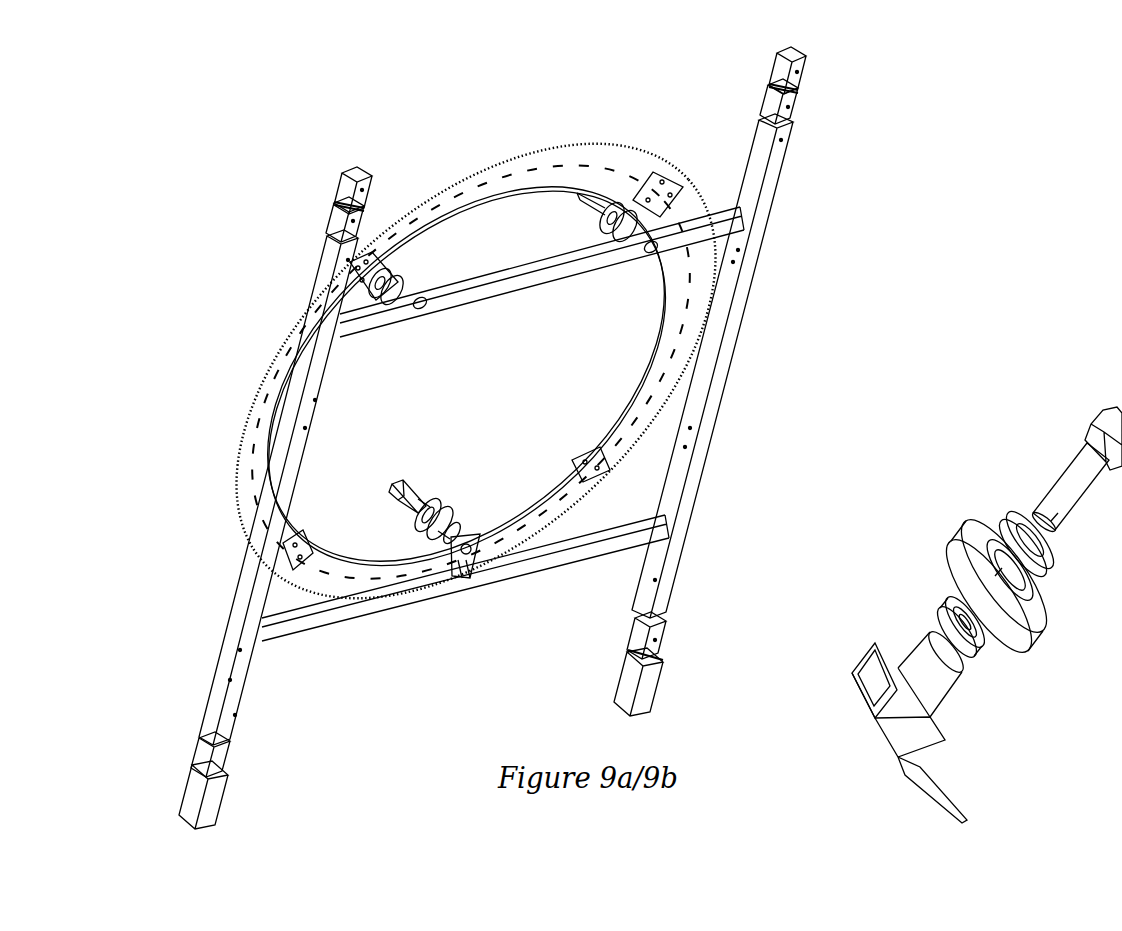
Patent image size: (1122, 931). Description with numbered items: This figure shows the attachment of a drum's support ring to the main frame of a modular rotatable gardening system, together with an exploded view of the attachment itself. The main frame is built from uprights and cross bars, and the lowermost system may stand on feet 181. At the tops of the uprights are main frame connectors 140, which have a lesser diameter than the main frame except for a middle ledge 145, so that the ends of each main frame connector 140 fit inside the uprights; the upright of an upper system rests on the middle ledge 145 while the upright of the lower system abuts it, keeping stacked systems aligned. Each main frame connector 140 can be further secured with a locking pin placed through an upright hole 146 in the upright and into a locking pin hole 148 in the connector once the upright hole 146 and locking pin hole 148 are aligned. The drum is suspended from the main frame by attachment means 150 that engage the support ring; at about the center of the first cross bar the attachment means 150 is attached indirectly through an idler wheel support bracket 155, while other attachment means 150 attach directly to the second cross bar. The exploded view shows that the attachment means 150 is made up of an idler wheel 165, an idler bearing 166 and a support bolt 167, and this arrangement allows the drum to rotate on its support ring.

In FIG. 9A, the main frame connector 140 is at (342, 185).
In FIG. 9A, the middle ledge 145 is at (765, 78).
In FIG. 9A, the upright hole 146 is at (783, 140).
In FIG. 9A, the locking pin hole 148 is at (790, 107).
In FIG. 9A, the attachment means 150 is at (468, 513).
In FIG. 9A, the idler wheel support bracket 155 is at (470, 580).
In FIG. 9B, the idler wheel 165 is at (955, 525).
In FIG. 9A, the idler bearing 166 is at (428, 503).
In FIG. 9B, the idler bearing 166 is at (937, 597).
In FIG. 9A, the support bolt 167 is at (405, 487).
In FIG. 9B, the support bolt 167 is at (1040, 468).
In FIG. 9A, the feet 181 is at (627, 688).